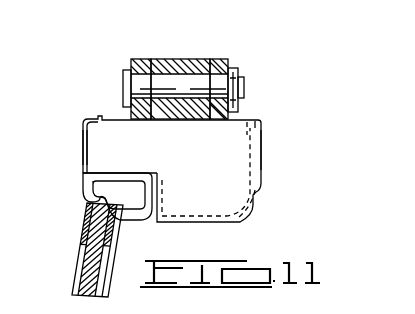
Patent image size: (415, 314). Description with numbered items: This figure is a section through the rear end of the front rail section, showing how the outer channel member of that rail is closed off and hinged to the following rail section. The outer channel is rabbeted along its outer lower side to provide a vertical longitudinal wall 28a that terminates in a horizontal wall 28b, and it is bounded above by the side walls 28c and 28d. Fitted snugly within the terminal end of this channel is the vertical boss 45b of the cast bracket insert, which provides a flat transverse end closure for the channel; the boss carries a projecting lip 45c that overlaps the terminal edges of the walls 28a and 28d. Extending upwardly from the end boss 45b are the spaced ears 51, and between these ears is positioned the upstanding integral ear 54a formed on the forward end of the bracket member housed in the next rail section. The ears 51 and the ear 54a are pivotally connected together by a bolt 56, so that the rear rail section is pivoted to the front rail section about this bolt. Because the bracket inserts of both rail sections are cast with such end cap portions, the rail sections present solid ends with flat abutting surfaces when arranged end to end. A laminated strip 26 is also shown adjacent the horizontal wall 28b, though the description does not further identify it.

The spaced ears 51 is at (137, 60).
The upstanding integral ear 54a is at (180, 58).
The bolt 56 is at (212, 80).
The side wall 28c is at (95, 128).
The side wall 28d is at (247, 131).
The projecting lip 45c is at (262, 140).
The vertical boss 45b is at (95, 153).
The horizontal wall 28b is at (122, 172).
The vertical longitudinal wall 28a is at (163, 191).
The laminated strip 26 is at (87, 250).